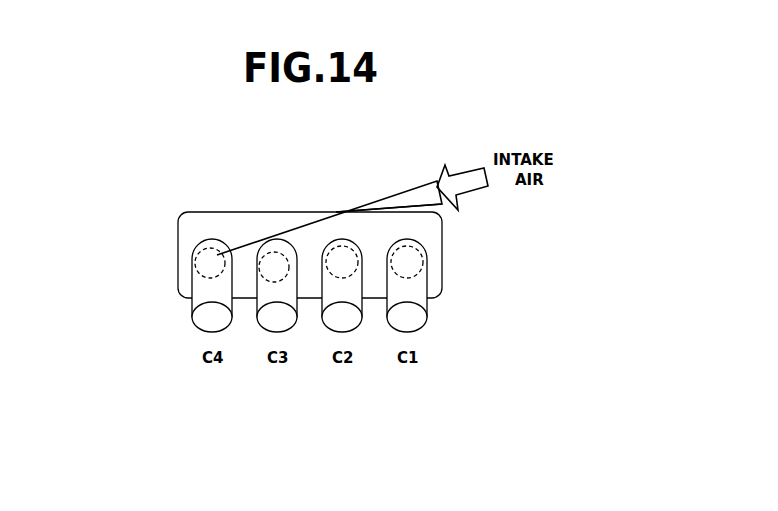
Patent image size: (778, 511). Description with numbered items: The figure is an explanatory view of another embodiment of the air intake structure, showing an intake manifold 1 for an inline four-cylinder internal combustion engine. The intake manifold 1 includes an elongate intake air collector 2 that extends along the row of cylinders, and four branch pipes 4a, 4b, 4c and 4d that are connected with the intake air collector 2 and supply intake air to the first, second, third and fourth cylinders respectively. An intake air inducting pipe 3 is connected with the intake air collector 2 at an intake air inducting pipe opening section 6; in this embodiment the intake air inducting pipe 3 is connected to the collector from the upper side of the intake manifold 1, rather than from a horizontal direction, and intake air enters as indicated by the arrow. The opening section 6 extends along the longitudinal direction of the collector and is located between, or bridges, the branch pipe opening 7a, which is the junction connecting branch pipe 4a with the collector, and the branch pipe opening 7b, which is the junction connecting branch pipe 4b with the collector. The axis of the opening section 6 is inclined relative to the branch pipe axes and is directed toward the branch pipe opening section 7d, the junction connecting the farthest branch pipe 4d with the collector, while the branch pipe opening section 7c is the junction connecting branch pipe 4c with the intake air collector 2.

The intake manifold 1 is at (148, 203).
The intake air collector 2 is at (242, 220).
The intake air inducting pipe 3 is at (378, 199).
The branch pipe 4a is at (418, 283).
The branch pipe 4b is at (363, 310).
The branch pipe 4c is at (293, 302).
The branch pipe 4d is at (202, 292).
The intake air inducting pipe opening section 6 is at (337, 213).
The branch pipe opening 7a is at (423, 253).
The branch pipe opening 7b is at (342, 246).
The branch pipe opening section 7c is at (260, 300).
The branch pipe opening section 7d is at (198, 267).